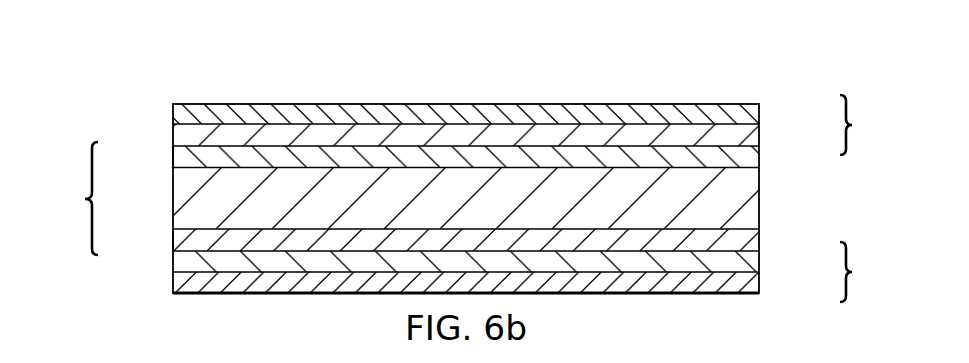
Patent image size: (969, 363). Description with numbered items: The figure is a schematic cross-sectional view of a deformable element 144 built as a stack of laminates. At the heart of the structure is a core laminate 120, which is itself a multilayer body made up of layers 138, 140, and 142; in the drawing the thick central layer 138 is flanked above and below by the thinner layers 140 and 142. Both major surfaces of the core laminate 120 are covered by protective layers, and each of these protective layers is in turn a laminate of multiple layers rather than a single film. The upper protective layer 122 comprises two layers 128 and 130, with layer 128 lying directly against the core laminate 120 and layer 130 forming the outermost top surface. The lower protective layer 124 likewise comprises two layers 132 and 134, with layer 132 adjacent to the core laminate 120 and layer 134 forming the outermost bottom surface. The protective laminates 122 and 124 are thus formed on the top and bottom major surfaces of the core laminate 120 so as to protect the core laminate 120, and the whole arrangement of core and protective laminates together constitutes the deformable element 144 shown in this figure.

The core laminate 120 is at (71, 198).
The protective layer 122 is at (869, 125).
The protective layer 124 is at (869, 272).
The layer 128 is at (760, 146).
The layer 130 is at (760, 107).
The layer 132 is at (760, 243).
The layer 134 is at (760, 287).
The layer 138 is at (486, 210).
The layer 140 is at (173, 152).
The layer 142 is at (173, 244).
The deformable element 144 is at (530, 87).